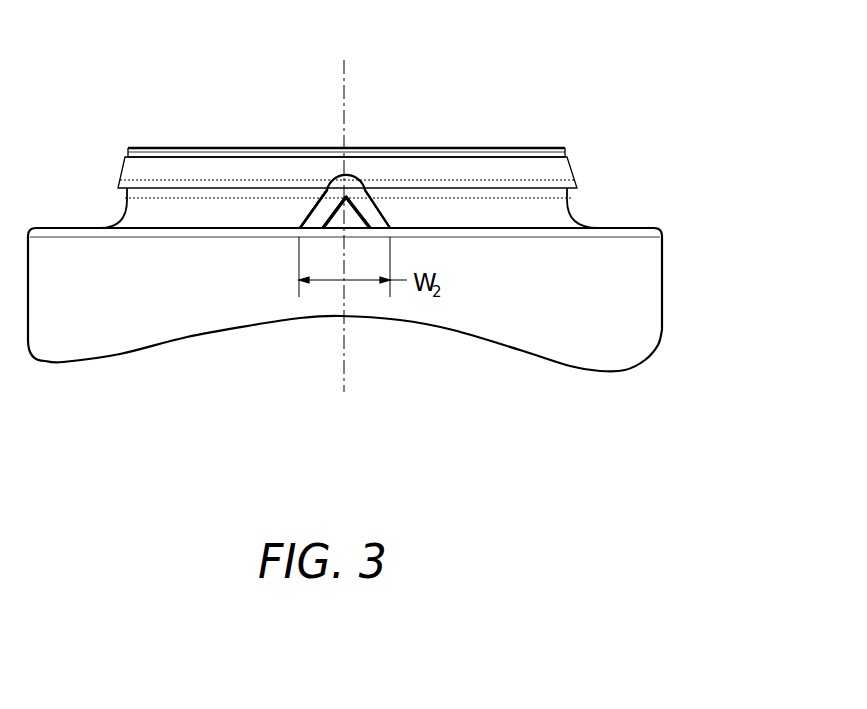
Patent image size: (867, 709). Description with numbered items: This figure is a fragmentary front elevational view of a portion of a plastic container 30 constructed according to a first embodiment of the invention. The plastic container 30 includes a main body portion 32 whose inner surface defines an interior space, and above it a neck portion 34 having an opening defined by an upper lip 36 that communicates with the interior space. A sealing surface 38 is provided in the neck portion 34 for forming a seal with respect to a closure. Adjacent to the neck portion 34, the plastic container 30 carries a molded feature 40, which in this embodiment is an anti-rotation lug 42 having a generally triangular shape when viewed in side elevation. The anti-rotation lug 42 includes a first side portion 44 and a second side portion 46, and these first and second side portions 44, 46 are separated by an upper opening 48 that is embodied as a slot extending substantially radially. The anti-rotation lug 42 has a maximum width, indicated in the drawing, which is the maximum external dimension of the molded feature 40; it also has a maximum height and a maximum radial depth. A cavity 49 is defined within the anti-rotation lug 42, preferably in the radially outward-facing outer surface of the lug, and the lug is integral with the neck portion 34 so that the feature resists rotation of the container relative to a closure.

The plastic container 30 is at (620, 110).
The main body portion 32 is at (647, 293).
The neck portion 34 is at (578, 218).
The upper lip 36 is at (185, 147).
The sealing surface 38 is at (570, 166).
The molded feature 40 is at (288, 210).
The anti-rotation lug 42 is at (390, 213).
The first side portion 44 is at (322, 200).
The second side portion 46 is at (362, 195).
The upper opening 48 is at (350, 196).
The cavity 49 is at (342, 214).